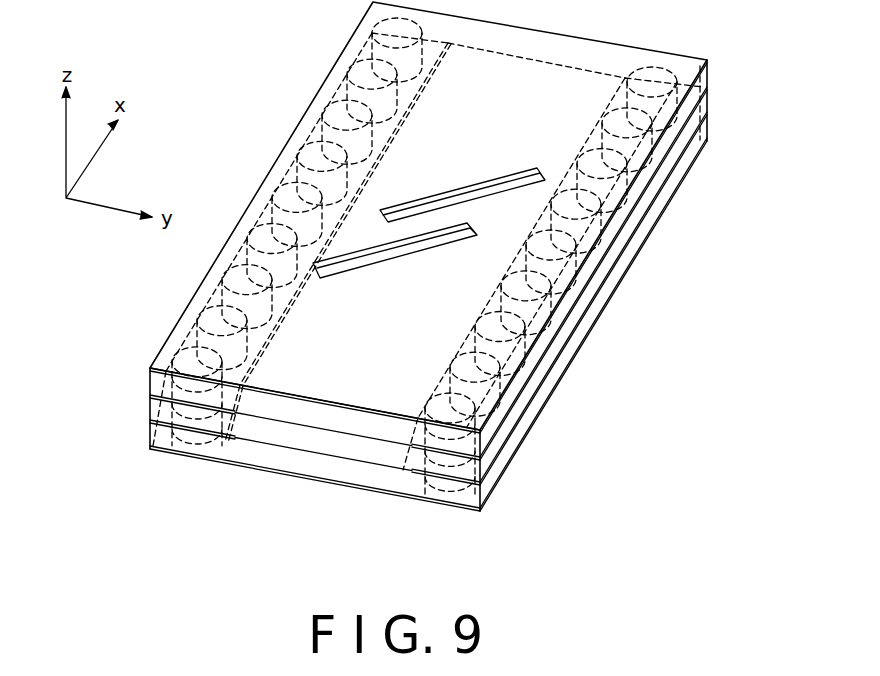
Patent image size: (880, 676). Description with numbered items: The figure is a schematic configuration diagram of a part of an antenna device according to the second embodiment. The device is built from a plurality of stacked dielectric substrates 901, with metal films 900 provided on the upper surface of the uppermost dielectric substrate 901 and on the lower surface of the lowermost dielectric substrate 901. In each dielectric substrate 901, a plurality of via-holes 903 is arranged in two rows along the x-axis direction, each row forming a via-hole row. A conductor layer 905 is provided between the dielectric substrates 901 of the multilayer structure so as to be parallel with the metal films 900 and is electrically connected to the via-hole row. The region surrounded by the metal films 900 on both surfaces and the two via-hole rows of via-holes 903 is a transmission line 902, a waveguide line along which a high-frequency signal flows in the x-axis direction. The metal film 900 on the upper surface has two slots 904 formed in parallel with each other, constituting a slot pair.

The metal film 900 is at (505, 77).
The dielectric substrate 901 is at (470, 442).
The transmission line 902 is at (300, 437).
The via-hole 903 is at (505, 330).
The slot 904 is at (463, 197).
The conductor layer 905 is at (632, 197).